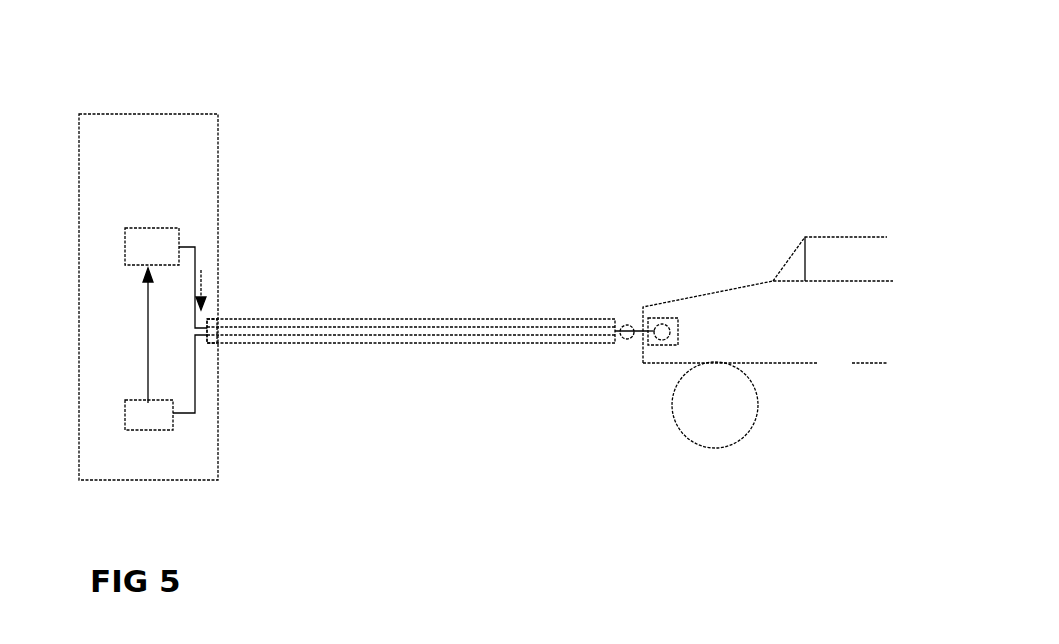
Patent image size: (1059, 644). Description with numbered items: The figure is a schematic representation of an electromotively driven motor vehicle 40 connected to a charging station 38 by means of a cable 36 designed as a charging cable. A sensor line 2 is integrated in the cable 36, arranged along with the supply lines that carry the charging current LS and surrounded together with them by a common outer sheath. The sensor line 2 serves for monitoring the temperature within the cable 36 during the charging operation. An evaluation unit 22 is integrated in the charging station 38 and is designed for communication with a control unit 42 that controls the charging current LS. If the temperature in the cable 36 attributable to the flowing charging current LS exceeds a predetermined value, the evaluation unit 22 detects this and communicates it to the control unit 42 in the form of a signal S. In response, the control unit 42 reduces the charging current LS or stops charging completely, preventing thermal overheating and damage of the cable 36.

The charging station 38 is at (176, 118).
The control unit 42 is at (180, 241).
The evaluation unit 22 is at (163, 435).
The signal S is at (148, 322).
The charging current LS is at (203, 290).
The cable 36 is at (432, 312).
The sensor line 2 is at (410, 343).
The motor vehicle 40 is at (745, 322).